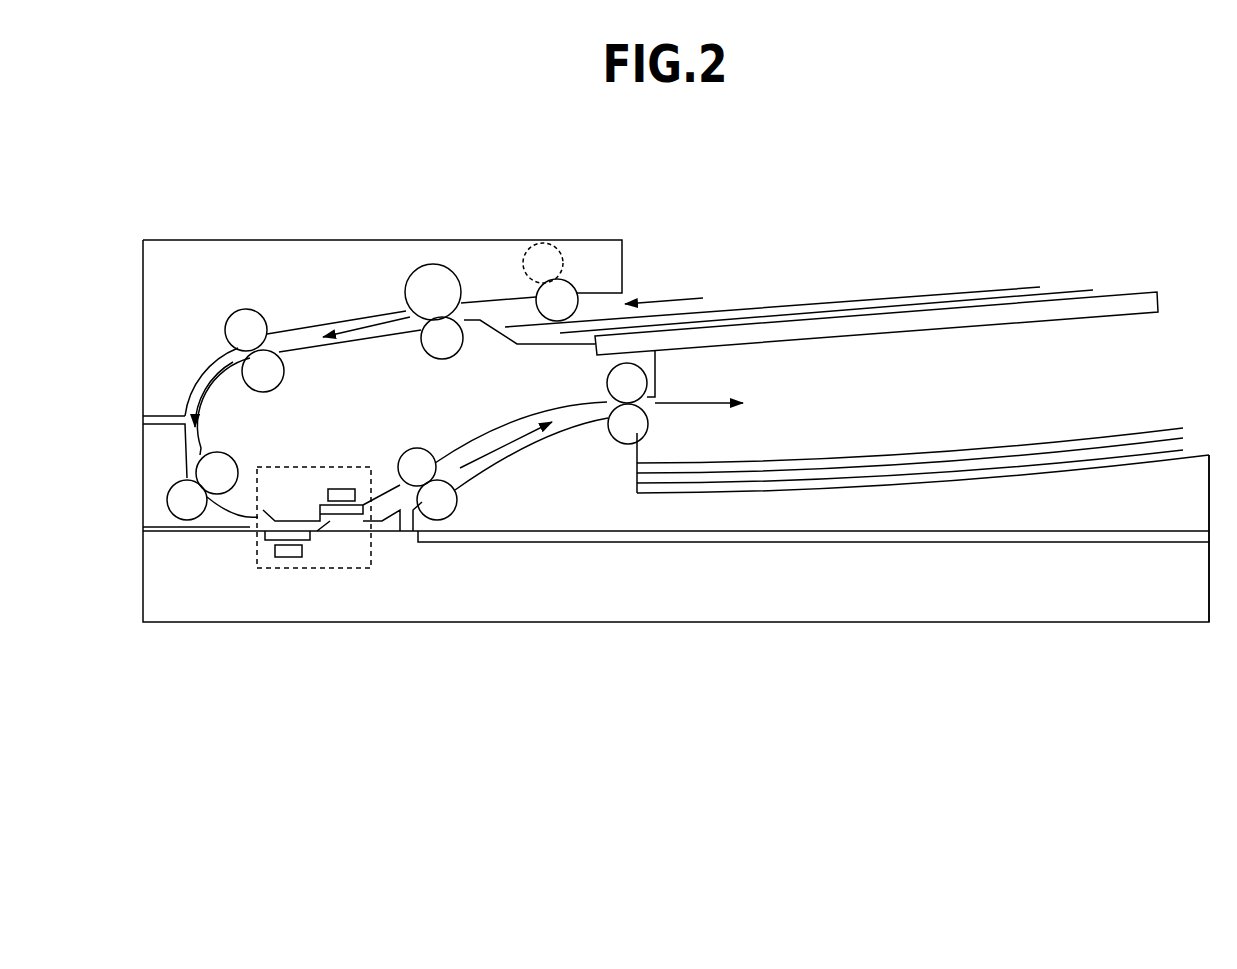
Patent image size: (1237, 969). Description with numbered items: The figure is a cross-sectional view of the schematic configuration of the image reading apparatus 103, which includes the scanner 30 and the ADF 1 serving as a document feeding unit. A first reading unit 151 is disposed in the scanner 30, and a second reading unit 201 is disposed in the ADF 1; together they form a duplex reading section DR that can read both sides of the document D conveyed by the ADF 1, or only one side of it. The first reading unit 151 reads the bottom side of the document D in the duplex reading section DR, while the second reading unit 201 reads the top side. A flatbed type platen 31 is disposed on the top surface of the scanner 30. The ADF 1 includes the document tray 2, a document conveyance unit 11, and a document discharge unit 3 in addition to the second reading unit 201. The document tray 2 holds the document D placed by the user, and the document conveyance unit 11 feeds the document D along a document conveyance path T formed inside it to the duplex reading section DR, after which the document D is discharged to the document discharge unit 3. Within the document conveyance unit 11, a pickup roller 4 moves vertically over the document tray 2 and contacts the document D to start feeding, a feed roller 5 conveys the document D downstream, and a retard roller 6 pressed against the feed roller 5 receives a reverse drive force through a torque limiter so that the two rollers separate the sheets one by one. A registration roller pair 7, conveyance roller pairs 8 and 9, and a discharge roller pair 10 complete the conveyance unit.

The ADF 1 is at (1197, 325).
The document tray 2 is at (997, 324).
The document discharge unit 3 is at (1192, 467).
The pickup roller 4 is at (533, 292).
The feed roller 5 is at (433, 264).
The retard roller 6 is at (447, 360).
The registration roller pair 7 is at (246, 309).
The conveyance roller pair 8 is at (167, 500).
The conveyance roller pair 9 is at (417, 448).
The discharge roller pair 10 is at (609, 420).
The document conveyance unit 11 is at (204, 232).
The scanner 30 is at (1171, 640).
The platen 31 is at (792, 540).
The image reading apparatus 103 is at (627, 202).
The first reading unit 151 is at (290, 557).
The second reading unit 201 is at (342, 489).
The document D is at (818, 303).
The document conveyance path T is at (197, 380).
The duplex reading section DR is at (366, 578).